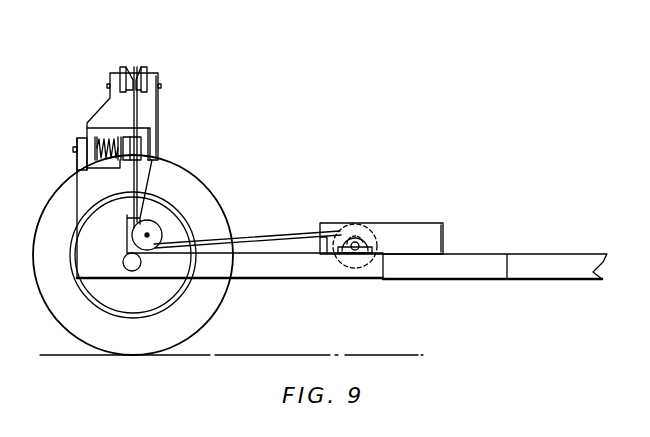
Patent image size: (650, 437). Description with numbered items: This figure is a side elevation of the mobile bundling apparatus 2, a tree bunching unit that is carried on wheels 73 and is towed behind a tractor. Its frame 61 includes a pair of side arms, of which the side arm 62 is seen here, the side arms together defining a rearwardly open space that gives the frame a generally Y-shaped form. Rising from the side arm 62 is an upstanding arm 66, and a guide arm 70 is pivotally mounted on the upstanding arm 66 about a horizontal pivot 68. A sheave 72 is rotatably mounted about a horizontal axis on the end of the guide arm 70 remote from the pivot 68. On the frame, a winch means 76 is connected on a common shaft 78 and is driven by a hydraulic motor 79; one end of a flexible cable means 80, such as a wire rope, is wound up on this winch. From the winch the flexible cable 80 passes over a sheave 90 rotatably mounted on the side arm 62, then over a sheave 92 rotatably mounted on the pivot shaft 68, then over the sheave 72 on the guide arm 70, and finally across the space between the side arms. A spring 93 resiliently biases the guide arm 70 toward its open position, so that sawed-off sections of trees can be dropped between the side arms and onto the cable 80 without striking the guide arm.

The mobile bundling apparatus 2 is at (409, 176).
The frame 61 is at (532, 276).
The side arm 62 is at (305, 268).
The upstanding arm 66 is at (108, 209).
The horizontal pivot 68 is at (73, 150).
The guide arm 70 is at (148, 111).
The sheave 72 is at (138, 69).
The wheel 73 is at (52, 213).
The winch means 76 is at (363, 224).
The common shaft 78 is at (356, 250).
The hydraulic motor 79 is at (412, 233).
The flexible cable means 80 is at (270, 239).
The sheave 90 is at (153, 229).
The sheave 92 is at (141, 147).
The spring 93 is at (103, 143).